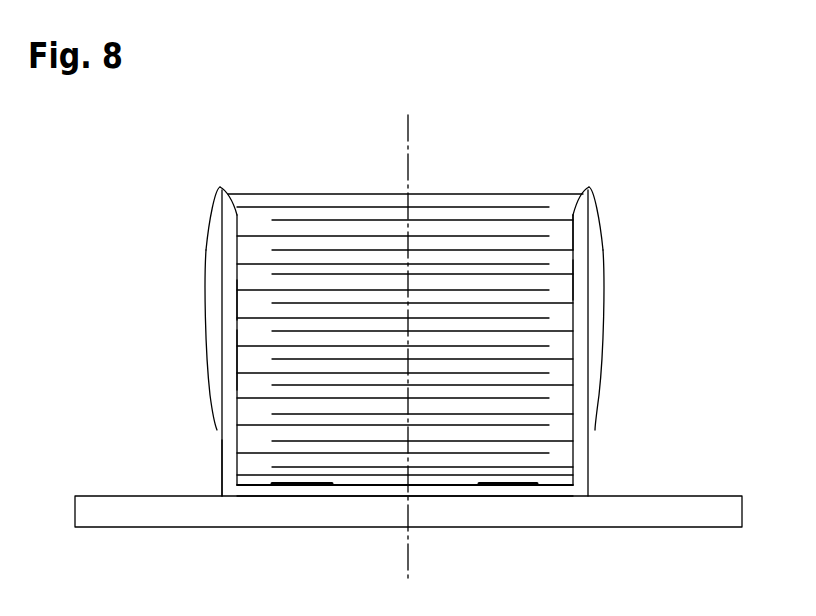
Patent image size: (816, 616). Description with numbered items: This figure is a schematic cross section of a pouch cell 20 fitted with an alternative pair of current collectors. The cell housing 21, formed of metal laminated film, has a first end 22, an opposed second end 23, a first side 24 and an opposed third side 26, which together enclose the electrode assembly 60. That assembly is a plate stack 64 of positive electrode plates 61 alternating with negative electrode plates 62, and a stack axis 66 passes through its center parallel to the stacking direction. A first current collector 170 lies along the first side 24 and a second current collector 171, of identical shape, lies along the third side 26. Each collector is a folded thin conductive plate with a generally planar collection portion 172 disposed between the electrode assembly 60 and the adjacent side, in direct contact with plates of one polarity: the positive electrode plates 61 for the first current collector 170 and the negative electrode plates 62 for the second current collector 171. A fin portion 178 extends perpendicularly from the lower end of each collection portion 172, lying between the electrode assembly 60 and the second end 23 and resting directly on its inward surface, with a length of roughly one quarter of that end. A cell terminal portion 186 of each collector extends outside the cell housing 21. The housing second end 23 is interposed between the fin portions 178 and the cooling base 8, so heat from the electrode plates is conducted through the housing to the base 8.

The cooling base 8 is at (697, 507).
The cell 20 is at (325, 192).
The cell housing 21 is at (422, 343).
The first end 22 is at (255, 192).
The second end 23 is at (380, 497).
The first side 24 is at (222, 453).
The third side 26 is at (588, 323).
The electrode assembly 60 is at (547, 195).
The positive electrode plates 61 is at (247, 315).
The negative electrode plates 62 is at (560, 247).
The plate stack 64 is at (405, 480).
The stack axis 66 is at (408, 158).
The first current collector 170 is at (212, 195).
The second current collector 171 is at (602, 198).
The collection portion 172 is at (237, 358).
The fin portion 178 is at (280, 487).
The cell terminal portion 186 is at (212, 402).